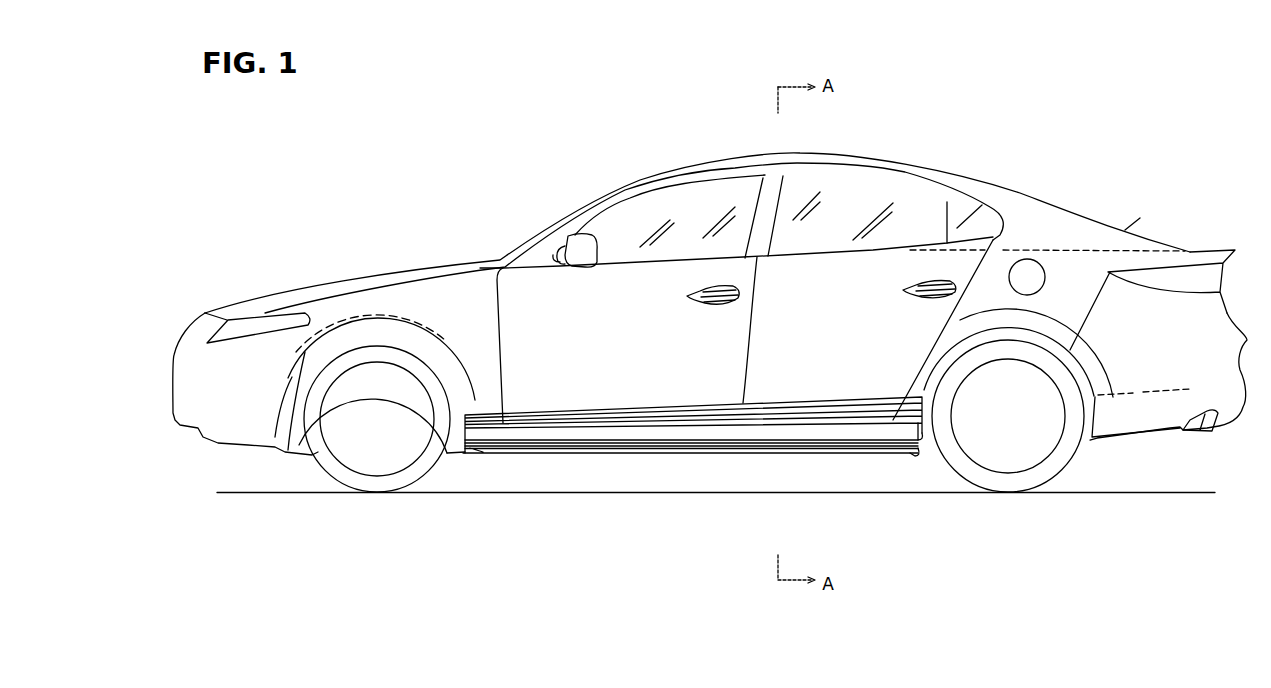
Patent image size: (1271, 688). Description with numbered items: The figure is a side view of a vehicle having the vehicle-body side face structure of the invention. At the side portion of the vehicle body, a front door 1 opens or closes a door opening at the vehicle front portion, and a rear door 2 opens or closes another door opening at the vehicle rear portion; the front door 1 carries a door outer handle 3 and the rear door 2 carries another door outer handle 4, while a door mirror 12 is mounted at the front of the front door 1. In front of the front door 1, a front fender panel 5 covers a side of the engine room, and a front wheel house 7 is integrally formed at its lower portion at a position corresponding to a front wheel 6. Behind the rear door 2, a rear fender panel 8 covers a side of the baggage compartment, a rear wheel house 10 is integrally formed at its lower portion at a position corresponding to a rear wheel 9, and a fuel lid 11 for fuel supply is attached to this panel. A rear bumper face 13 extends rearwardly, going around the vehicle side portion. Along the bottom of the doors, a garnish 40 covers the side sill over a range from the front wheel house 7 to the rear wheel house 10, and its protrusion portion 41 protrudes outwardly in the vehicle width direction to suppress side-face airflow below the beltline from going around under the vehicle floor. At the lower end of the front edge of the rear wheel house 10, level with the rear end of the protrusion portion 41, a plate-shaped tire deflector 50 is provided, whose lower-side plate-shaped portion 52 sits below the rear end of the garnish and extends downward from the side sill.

The front door 1 is at (603, 332).
The rear door 2 is at (820, 332).
The door outer handle 3 is at (713, 307).
The door outer handle 4 is at (927, 297).
The front fender panel 5 is at (438, 307).
The front wheel 6 is at (425, 482).
The front wheel house 7 is at (433, 357).
The rear fender panel 8 is at (1076, 294).
The rear wheel 9 is at (1055, 477).
The rear wheel house 10 is at (1080, 361).
The fuel lid 11 is at (1030, 257).
The door mirror 12 is at (592, 235).
The rear bumper face 13 is at (1218, 320).
The garnish 40 is at (597, 423).
The protrusion portion 41 is at (673, 448).
The tire deflector 50 is at (923, 431).
The lower-side plate-shaped portion 52 is at (914, 456).